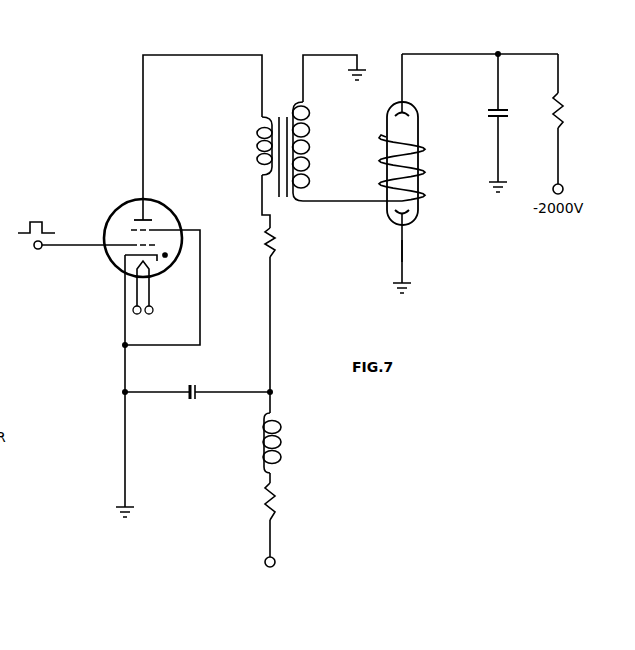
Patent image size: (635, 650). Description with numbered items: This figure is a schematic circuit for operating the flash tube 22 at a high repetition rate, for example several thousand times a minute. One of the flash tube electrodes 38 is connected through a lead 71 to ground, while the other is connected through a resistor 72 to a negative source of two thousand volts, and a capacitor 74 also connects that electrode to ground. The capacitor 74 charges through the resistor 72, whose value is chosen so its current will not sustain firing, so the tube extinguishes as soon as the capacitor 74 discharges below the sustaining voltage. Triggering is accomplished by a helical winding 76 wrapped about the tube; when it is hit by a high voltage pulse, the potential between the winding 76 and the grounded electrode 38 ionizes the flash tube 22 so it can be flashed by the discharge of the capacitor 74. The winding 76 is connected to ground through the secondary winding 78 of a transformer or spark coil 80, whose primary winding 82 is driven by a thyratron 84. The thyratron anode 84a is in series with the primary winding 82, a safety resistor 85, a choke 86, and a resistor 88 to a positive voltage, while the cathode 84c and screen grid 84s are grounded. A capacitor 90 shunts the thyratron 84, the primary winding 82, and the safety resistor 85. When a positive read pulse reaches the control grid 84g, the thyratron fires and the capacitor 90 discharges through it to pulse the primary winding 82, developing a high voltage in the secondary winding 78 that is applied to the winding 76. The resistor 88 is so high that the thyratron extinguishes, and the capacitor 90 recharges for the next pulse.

The thyratron 84 is at (159, 196).
The thyratron anode 84a is at (136, 217).
The screen grid 84s is at (157, 228).
The control grid 84g is at (133, 247).
The cathode 84c is at (152, 258).
The primary winding 82 is at (257, 133).
The secondary winding 78 is at (310, 145).
The transformer or spark coil 80 is at (285, 205).
The safety resistor 85 is at (266, 251).
The helical winding 76 is at (381, 162).
The flash tube 22 is at (422, 137).
The flash tube electrodes 38 is at (414, 112).
The lead 71 is at (402, 250).
The capacitor 74 is at (510, 110).
The resistor 72 is at (567, 120).
The capacitor 90 is at (195, 386).
The choke 86 is at (282, 443).
The resistor 88 is at (280, 502).